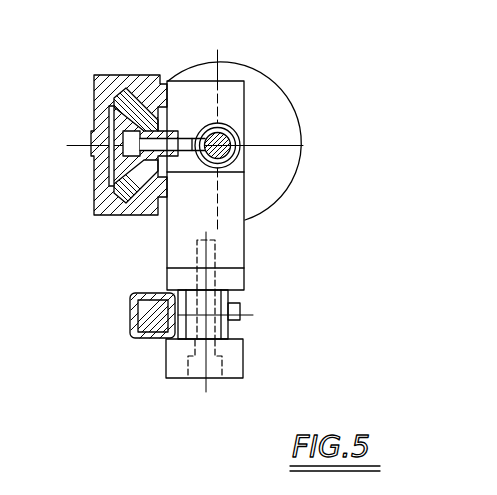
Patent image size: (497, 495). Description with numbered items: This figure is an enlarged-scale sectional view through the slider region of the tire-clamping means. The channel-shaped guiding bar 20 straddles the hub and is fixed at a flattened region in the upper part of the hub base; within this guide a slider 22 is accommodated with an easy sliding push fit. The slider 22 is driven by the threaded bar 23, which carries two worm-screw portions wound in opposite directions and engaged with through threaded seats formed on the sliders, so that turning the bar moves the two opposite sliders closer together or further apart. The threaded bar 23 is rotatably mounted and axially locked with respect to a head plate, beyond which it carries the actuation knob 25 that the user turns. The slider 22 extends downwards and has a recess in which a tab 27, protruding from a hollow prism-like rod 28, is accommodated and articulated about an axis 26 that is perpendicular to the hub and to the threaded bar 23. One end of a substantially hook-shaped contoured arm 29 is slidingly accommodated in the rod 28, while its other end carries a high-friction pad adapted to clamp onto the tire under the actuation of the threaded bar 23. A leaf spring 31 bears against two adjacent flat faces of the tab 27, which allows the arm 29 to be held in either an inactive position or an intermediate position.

The guiding bar 20 is at (98, 105).
The slider 22 is at (242, 245).
The threaded bar 23 is at (237, 162).
The actuation knob 25 is at (265, 92).
The axis 26 is at (205, 388).
The tab 27 is at (220, 339).
The hollow prism-like rod 28 is at (128, 313).
The contoured arm 29 is at (155, 327).
The leaf spring 31 is at (228, 330).